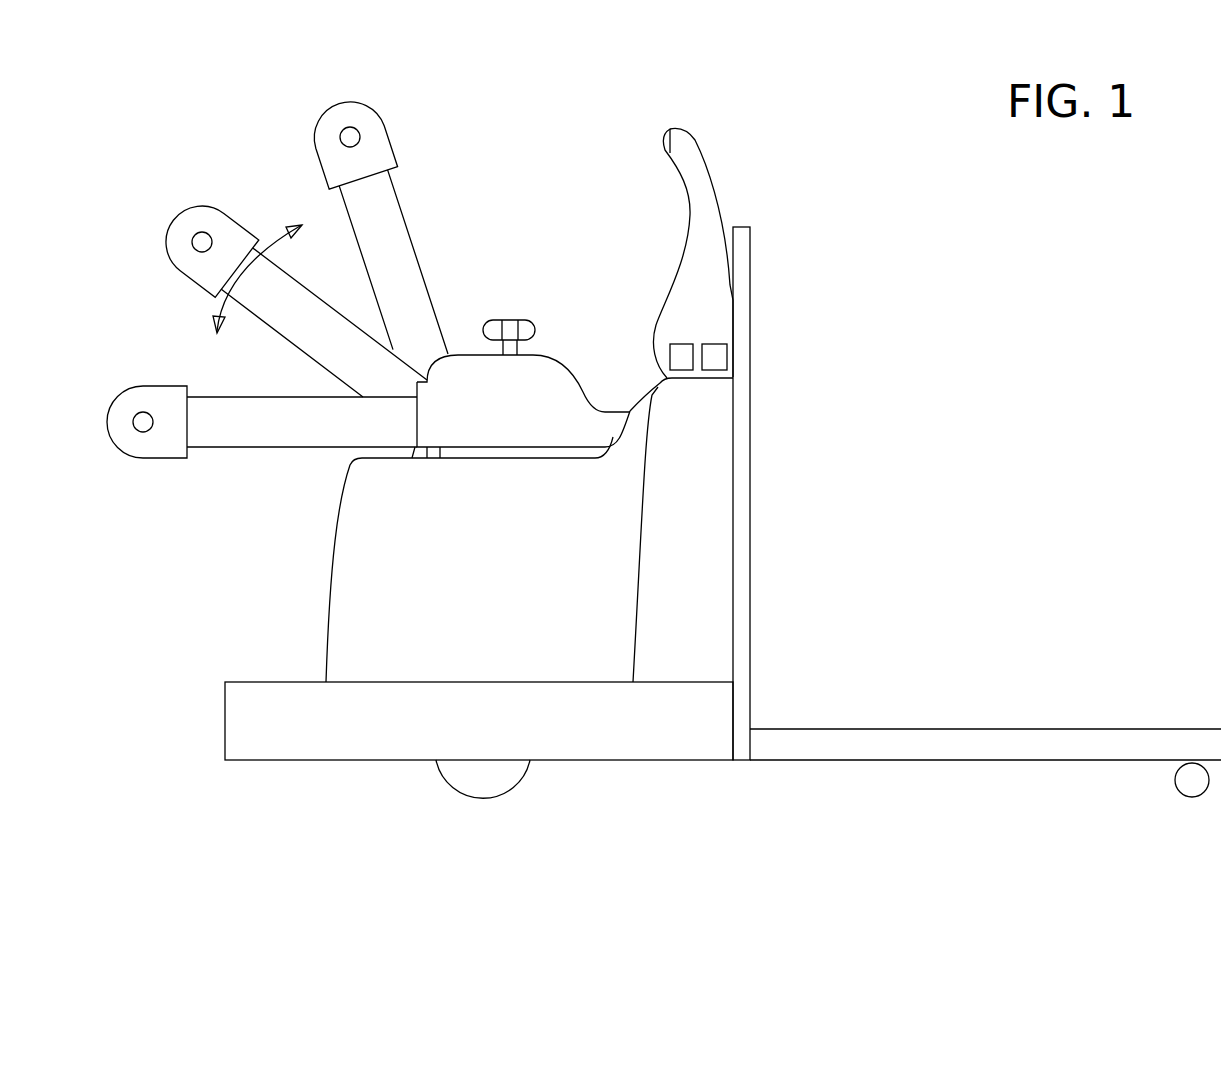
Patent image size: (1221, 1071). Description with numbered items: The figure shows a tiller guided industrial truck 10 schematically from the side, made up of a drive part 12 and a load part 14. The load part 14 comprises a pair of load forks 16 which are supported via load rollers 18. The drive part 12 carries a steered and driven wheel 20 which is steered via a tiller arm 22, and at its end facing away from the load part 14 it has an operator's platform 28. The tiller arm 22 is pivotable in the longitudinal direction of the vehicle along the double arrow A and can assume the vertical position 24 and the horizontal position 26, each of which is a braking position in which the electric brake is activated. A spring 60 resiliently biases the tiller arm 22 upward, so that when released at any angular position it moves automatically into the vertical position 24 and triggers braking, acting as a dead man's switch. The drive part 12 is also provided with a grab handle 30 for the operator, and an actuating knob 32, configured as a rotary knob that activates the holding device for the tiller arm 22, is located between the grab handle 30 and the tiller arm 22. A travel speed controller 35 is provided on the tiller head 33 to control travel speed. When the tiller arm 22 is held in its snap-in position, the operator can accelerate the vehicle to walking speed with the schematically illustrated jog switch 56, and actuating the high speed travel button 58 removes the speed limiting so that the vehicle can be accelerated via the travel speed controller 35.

The industrial truck 10 is at (835, 206).
The drive part 12 is at (328, 592).
The load part 14 is at (919, 647).
The load forks 16 is at (1022, 740).
The load rollers 18 is at (1180, 778).
The steered and driven wheel 20 is at (462, 784).
The tiller arm 22 is at (295, 328).
The vertical position 24 is at (397, 232).
The horizontal position 26 is at (238, 437).
The operator's platform 28 is at (242, 680).
The grab handle 30 is at (697, 163).
The actuating knob 32 is at (509, 318).
The tiller head 33 is at (178, 257).
The travel speed controller 35 is at (203, 230).
The jog switch 56 is at (673, 357).
The high speed travel button 58 is at (662, 140).
The spring 60 is at (412, 452).